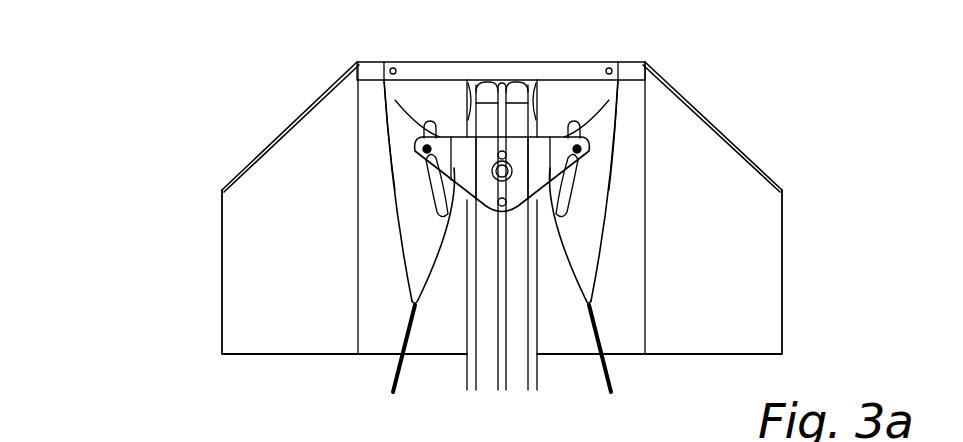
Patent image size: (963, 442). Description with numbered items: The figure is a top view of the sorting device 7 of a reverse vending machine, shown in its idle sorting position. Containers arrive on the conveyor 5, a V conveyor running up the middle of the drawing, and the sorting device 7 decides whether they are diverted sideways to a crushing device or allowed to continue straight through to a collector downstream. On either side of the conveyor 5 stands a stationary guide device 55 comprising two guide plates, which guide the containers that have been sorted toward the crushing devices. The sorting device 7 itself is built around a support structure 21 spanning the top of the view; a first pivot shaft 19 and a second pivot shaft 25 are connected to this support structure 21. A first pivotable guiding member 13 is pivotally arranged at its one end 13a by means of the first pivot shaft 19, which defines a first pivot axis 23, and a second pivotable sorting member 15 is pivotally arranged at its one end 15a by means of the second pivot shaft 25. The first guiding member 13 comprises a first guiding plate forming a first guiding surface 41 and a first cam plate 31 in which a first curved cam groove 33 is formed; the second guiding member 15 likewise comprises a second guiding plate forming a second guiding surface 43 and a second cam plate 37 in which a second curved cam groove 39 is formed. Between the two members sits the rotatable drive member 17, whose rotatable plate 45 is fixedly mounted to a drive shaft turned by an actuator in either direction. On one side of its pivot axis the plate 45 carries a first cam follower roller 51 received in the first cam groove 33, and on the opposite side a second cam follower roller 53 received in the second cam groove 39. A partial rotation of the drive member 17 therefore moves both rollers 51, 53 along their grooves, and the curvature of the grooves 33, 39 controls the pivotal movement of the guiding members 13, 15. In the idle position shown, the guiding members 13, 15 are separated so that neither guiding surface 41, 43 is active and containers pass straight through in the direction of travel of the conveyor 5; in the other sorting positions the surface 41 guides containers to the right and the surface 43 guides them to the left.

The conveyor 5 is at (487, 352).
The sorting device 7 is at (246, 71).
The first pivotable guiding member 13 is at (622, 196).
The end of first sorting member 13a is at (605, 97).
The second pivotable sorting member 15 is at (378, 174).
The end of second sorting member 15a is at (398, 93).
The rotatable drive member 17 is at (490, 147).
The first pivot shaft 19 is at (612, 70).
The support structure 21 is at (438, 68).
The first pivot axis 23 is at (550, 434).
The second pivot shaft 25 is at (394, 68).
The first cam plate 31 is at (597, 162).
The first curved cam groove 33 is at (585, 190).
The second cam plate 37 is at (405, 115).
The second curved cam groove 39 is at (427, 190).
The first guiding surface 41 is at (590, 317).
The second guiding surface 43 is at (413, 313).
The rotatable plate 45 is at (540, 153).
The first cam follower roller 51 is at (581, 148).
The second cam follower roller 53 is at (423, 149).
The stationary guide device 55 is at (242, 262).